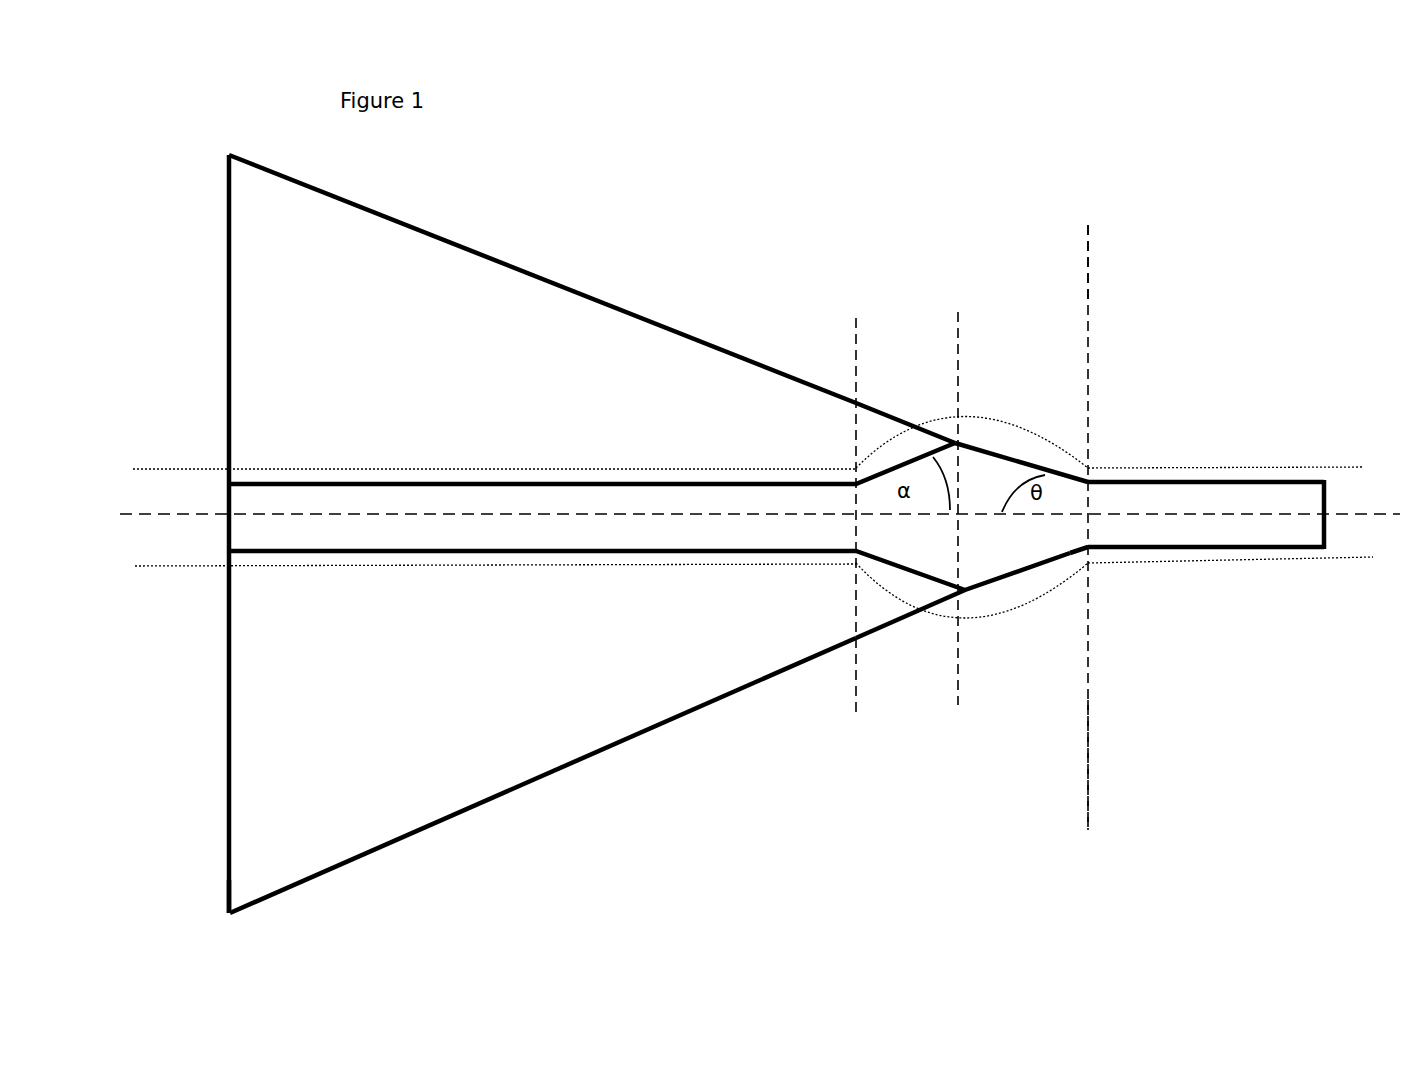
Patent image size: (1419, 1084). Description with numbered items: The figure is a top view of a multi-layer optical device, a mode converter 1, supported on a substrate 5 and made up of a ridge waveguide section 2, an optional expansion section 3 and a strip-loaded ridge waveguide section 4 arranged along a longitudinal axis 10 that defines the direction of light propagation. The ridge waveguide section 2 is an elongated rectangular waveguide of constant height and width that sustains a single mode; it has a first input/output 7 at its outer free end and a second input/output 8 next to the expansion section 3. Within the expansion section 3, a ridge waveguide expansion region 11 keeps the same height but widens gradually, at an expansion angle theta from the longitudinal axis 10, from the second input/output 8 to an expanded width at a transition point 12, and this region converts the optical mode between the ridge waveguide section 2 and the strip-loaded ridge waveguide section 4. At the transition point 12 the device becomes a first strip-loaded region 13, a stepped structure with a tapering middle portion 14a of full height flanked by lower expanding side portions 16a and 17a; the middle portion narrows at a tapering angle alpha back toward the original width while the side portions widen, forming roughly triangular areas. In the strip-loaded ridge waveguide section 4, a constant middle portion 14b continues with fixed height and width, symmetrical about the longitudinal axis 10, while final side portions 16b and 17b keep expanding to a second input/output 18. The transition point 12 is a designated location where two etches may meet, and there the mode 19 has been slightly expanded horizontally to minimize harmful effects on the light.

The mode converter 1 is at (855, 203).
The ridge waveguide section 2 is at (1195, 487).
The expansion section 3 is at (993, 750).
The strip-loaded ridge waveguide section 4 is at (437, 730).
The substrate 5 is at (1229, 212).
The first input/output 7 is at (1324, 513).
The second input/output 8 is at (1090, 552).
The longitudinal axis 10 is at (1374, 512).
The ridge waveguide expansion region 11 is at (1010, 465).
The transition point 12 is at (975, 597).
The first strip-loaded region 13 is at (900, 362).
The tapering middle portion 14a is at (934, 563).
The constant middle portion 14b is at (690, 500).
The expanding side portion 16a is at (888, 423).
The final side portion 16b is at (570, 358).
The expanding side portion 17a is at (893, 608).
The final side portion 17b is at (613, 702).
The second input/output 18 is at (229, 567).
The mode 19 is at (199, 469).